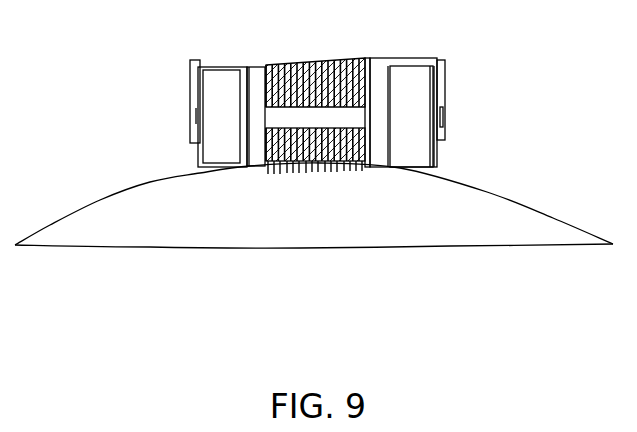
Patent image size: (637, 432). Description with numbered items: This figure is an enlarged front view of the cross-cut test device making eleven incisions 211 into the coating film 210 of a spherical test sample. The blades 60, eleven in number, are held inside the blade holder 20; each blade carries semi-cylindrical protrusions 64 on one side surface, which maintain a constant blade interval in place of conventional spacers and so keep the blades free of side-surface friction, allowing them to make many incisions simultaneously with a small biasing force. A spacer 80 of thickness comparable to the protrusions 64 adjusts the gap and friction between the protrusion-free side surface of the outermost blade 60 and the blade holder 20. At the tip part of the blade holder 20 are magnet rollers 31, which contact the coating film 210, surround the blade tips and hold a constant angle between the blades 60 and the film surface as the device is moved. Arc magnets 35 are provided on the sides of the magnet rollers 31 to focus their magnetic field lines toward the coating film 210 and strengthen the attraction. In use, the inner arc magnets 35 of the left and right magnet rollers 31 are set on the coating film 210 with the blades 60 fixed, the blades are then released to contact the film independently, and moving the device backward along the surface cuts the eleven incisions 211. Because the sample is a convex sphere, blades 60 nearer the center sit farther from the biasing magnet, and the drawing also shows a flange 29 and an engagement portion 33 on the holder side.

The blade holder 20 is at (382, 57).
The flange 29 is at (445, 65).
The magnet roller 31 is at (423, 98).
The engagement portion 33 is at (443, 115).
The arc magnet 35 is at (390, 66).
The blade 60 is at (275, 65).
The semi-cylindrical protrusion 64 is at (264, 128).
The spacer 80 is at (367, 58).
The coating film 210 is at (477, 202).
The incision 211 is at (272, 168).